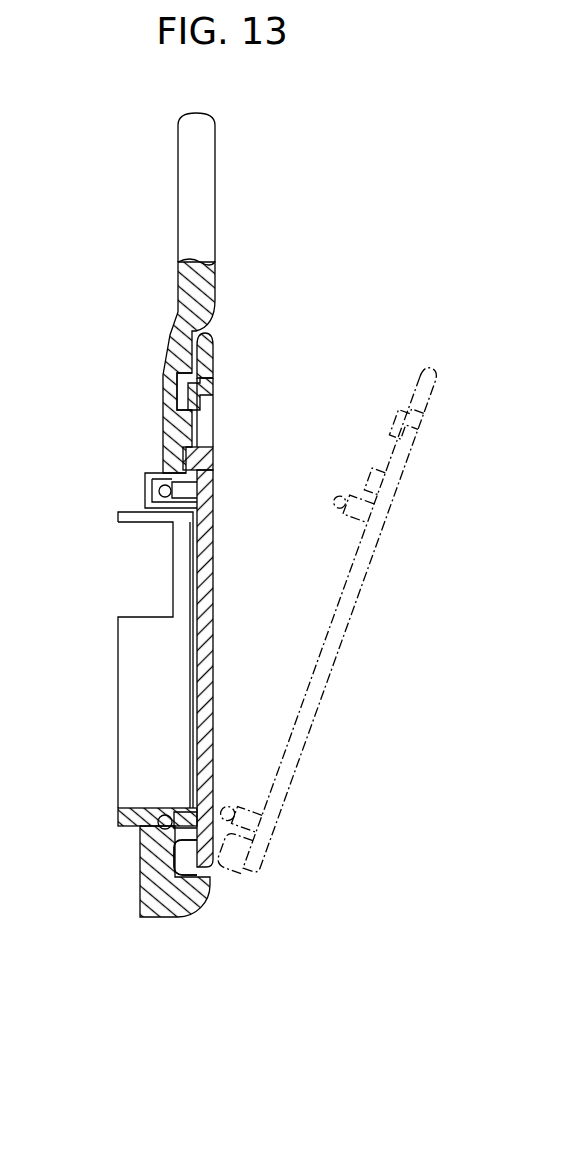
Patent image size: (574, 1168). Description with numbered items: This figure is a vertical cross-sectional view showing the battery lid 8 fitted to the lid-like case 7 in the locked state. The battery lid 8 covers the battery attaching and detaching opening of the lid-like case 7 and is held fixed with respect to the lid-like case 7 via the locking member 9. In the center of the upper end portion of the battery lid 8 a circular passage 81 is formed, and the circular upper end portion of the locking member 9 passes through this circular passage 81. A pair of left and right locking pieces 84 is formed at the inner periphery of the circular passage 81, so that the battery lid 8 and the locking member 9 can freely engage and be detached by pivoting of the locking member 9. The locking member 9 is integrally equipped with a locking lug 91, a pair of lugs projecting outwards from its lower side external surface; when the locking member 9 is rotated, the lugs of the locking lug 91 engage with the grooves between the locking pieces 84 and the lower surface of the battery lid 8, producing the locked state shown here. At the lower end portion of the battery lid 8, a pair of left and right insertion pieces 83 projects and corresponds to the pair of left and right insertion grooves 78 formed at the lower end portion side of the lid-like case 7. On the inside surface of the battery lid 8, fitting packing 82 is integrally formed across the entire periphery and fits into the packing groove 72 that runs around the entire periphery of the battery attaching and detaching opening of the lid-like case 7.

The lid-like case 7 is at (215, 183).
The battery lid 8 is at (213, 660).
The locking member 9 is at (213, 426).
The packing groove 72 is at (150, 835).
The insertion grooves 78 is at (152, 880).
The circular passage 81 is at (213, 453).
The fitting packing 82 is at (156, 493).
The insertion pieces 83 is at (175, 876).
The locking pieces 84 is at (174, 391).
The locking lug 91 is at (205, 387).